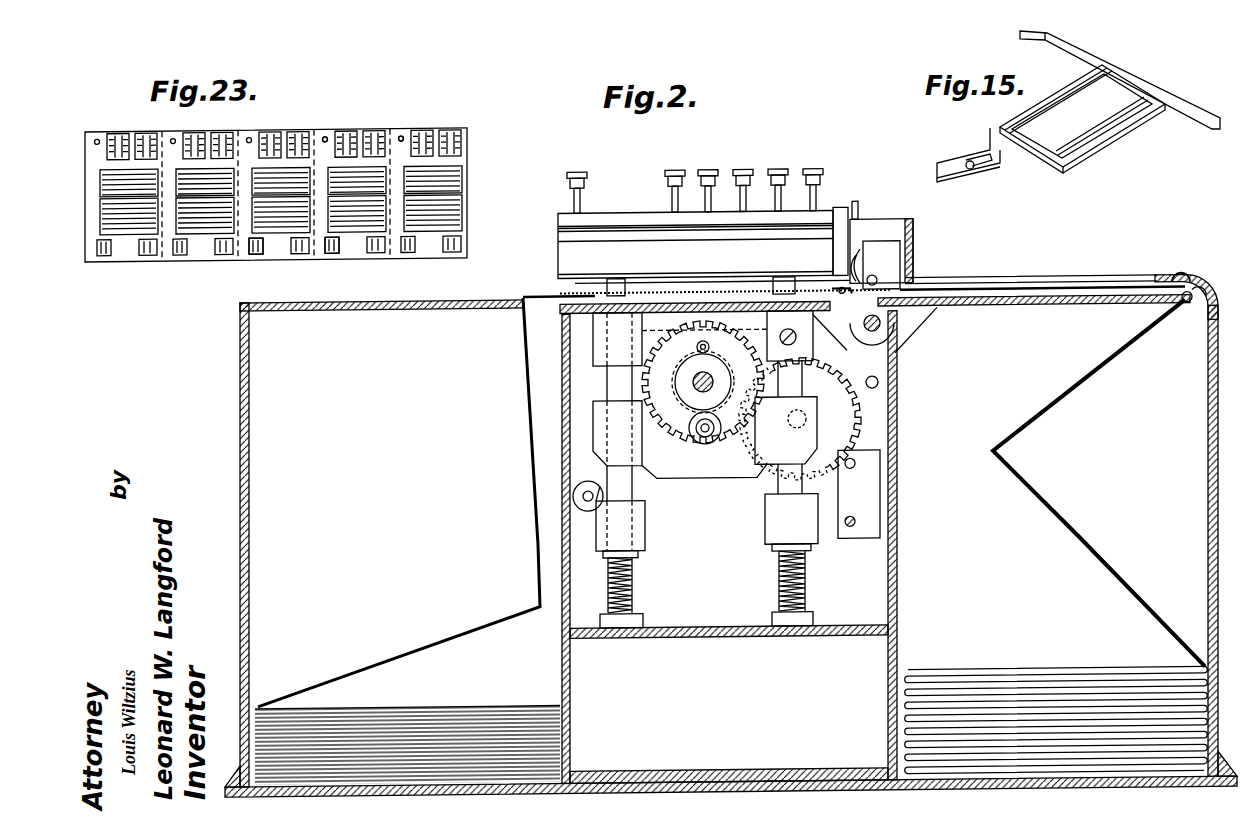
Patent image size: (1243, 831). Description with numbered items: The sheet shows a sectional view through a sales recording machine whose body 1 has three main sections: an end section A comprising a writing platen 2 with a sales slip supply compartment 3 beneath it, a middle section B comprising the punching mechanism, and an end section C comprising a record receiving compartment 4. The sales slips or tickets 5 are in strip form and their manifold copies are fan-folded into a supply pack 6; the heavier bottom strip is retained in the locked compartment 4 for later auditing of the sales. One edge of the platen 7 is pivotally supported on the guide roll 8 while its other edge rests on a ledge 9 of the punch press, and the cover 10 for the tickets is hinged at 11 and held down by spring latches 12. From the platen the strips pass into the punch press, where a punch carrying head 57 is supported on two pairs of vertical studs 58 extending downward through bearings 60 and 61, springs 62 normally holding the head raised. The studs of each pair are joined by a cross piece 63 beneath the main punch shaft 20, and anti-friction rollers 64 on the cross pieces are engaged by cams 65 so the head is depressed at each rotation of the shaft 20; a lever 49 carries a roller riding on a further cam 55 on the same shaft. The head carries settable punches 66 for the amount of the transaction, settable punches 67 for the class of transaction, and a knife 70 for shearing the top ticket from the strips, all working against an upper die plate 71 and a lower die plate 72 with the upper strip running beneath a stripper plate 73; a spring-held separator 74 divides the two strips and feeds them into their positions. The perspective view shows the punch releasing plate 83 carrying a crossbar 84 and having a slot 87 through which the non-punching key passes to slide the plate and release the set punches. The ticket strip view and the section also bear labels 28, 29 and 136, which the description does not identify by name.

In FIG. 2, the body 1 is at (240, 436).
In FIG. 2, the writing platen 2 is at (1050, 313).
In FIG. 2, the sales slip supply compartment 3 is at (1052, 611).
In FIG. 2, the record receiving compartment 4 is at (410, 587).
In FIG. 23, the sales slips or tickets 5 is at (192, 262).
In FIG. 2, the sales slips or tickets 5 is at (1000, 474).
In FIG. 2, the supply pack 6 is at (1000, 690).
In FIG. 2, the writing platen 7 is at (1180, 310).
In FIG. 2, the guide roll 8 is at (1205, 300).
In FIG. 2, the ledge 9 is at (896, 313).
In FIG. 2, the cover 10 is at (1181, 290).
In FIG. 2, the hinge 11 is at (1208, 364).
In FIG. 2, the spring latches 12 is at (858, 210).
In FIG. 2, the main punch shaft 20 is at (704, 391).
In FIG. 23, the registration holes 28 is at (401, 138).
In FIG. 23, the printed blocks 29 is at (328, 254).
In FIG. 2, the lever 49 is at (765, 336).
In FIG. 2, the cam 55 is at (698, 352).
In FIG. 2, the punch carrying head 57 is at (560, 252).
In FIG. 2, the vertical studs 58 is at (712, 287).
In FIG. 2, the bearing 60 is at (765, 525).
In FIG. 2, the bearing 61 is at (772, 620).
In FIG. 2, the springs 62 is at (778, 584).
In FIG. 2, the cross piece 63 is at (730, 480).
In FIG. 2, the anti-friction rollers 64 is at (706, 450).
In FIG. 2, the cams 65 is at (684, 384).
In FIG. 2, the settable punches 66 is at (778, 173).
In FIG. 2, the settable punches 67 is at (578, 175).
In FIG. 2, the knife 70 is at (840, 290).
In FIG. 2, the upper die plate 71 is at (566, 298).
In FIG. 2, the lower die plate 72 is at (562, 318).
In FIG. 2, the stripper plate 73 is at (602, 297).
In FIG. 2, the separator 74 is at (881, 254).
In FIG. 15, the plate 83 is at (1020, 166).
In FIG. 15, the crossbar 84 is at (1103, 60).
In FIG. 15, the slot 87 is at (966, 163).
In FIG. 2, the pawl 136 is at (825, 285).
In FIG. 2, the end section A is at (1082, 285).
In FIG. 2, the middle section B is at (633, 216).
In FIG. 2, the end section C is at (416, 300).